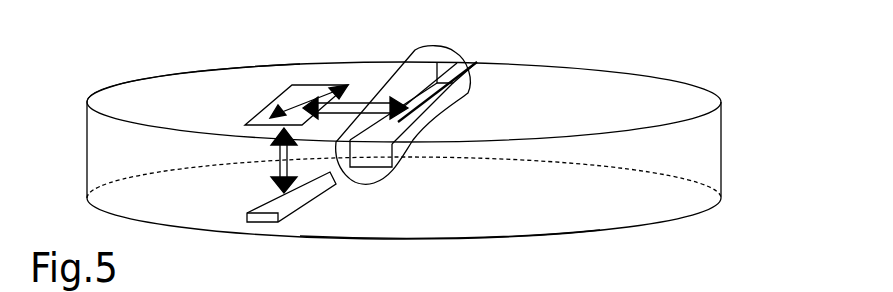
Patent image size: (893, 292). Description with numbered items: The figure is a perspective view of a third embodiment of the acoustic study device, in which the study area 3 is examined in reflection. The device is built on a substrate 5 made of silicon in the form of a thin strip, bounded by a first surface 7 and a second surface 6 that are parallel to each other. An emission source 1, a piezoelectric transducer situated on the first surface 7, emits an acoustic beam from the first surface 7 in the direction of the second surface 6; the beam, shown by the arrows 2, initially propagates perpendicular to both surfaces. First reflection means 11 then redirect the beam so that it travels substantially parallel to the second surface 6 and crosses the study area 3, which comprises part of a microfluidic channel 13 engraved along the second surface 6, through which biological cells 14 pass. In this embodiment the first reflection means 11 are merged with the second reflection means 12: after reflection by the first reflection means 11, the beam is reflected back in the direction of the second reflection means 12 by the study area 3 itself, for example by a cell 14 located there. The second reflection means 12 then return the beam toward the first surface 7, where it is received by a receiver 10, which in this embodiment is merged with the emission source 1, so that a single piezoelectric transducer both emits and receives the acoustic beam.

The emission source 1 is at (291, 231).
The receiver 10 is at (257, 223).
The first reflection means 11 is at (296, 70).
The second reflection means 12 is at (280, 122).
The arrows 2 is at (278, 176).
The study area 3 is at (462, 57).
The substrate 5 is at (720, 137).
The second surface 6 is at (138, 83).
The first surface 7 is at (610, 230).
The microfluidic channel 13 is at (374, 183).
The biological cells 14 is at (462, 116).